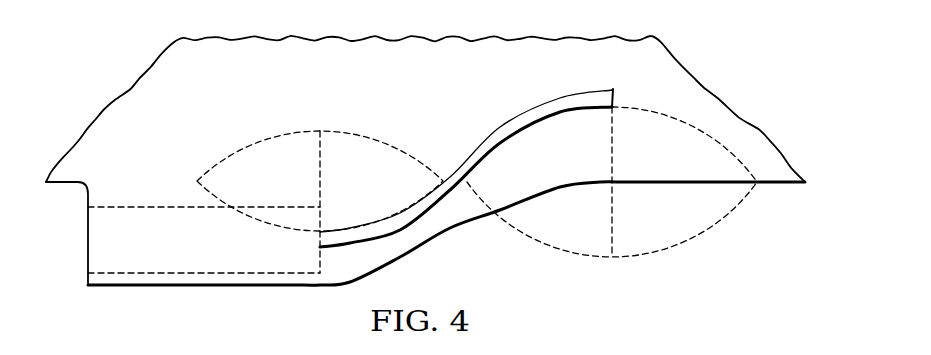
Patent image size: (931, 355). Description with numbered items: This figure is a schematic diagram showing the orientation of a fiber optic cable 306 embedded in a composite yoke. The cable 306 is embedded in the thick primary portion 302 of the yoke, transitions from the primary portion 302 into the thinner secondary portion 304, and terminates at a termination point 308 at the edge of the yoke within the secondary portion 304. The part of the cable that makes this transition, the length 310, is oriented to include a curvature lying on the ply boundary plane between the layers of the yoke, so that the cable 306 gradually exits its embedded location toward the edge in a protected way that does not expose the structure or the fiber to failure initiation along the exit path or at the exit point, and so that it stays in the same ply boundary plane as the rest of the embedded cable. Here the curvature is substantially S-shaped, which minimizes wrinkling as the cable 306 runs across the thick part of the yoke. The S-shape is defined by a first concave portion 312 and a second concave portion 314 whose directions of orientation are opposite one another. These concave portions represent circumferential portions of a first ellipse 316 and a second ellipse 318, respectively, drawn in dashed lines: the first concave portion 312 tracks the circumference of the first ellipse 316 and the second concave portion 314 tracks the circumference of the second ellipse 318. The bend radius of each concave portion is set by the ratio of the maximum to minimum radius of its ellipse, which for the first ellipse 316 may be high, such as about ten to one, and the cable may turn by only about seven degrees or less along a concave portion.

The primary portion 302 is at (702, 88).
The secondary portion 304 is at (530, 237).
The fiber optic cable 306 is at (530, 110).
The termination point 308 is at (323, 240).
The length 310 is at (480, 147).
The first concave portion 312 is at (513, 138).
The second concave portion 314 is at (400, 212).
The first ellipse 316 is at (687, 239).
The second ellipse 318 is at (293, 130).